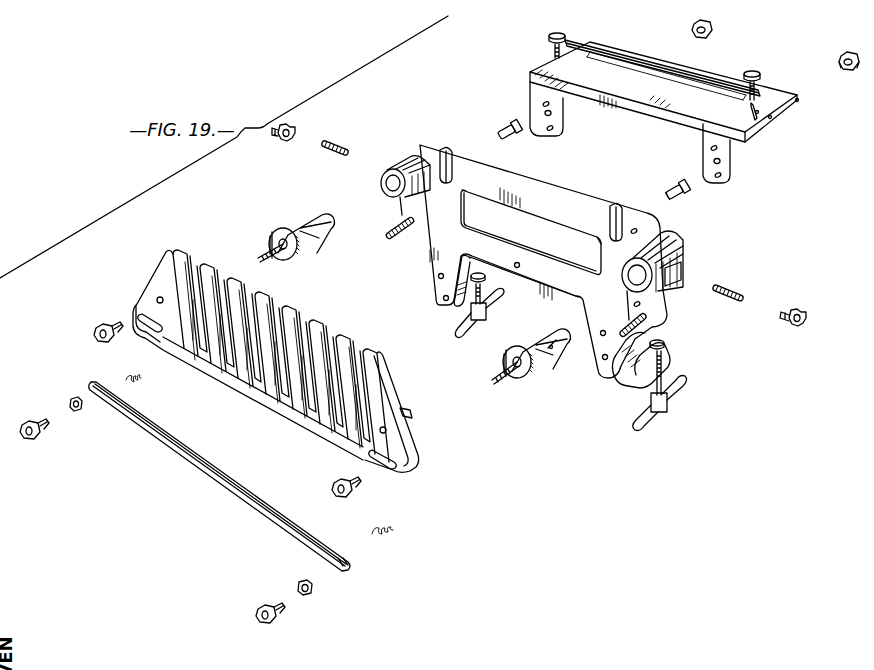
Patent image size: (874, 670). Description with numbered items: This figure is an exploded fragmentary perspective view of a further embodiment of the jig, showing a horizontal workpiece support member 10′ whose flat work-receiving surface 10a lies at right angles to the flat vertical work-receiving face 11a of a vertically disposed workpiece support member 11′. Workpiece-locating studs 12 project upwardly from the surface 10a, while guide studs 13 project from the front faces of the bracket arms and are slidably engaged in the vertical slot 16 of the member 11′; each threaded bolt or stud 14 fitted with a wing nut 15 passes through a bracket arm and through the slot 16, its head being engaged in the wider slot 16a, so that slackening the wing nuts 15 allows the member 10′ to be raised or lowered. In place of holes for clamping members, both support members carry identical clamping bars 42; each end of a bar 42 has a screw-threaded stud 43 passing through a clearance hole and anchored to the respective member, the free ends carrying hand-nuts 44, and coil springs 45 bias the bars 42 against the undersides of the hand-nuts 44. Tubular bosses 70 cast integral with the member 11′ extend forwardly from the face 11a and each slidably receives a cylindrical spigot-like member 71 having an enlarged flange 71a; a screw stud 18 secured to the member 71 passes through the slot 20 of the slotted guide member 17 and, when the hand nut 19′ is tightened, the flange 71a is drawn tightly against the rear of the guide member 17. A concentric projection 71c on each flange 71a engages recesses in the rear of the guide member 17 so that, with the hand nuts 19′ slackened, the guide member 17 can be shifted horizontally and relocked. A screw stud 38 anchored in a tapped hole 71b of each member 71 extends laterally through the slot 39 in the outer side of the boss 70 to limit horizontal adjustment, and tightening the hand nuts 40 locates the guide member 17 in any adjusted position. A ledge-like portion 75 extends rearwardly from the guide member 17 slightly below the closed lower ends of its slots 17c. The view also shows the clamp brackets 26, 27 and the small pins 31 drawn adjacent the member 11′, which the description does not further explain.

The workpiece support member 10′ is at (546, 58).
The work-receiving surface 10a is at (705, 108).
The workpiece support member 11′ is at (546, 175).
The work-receiving face 11a is at (537, 203).
The workpiece-locating studs 12 is at (792, 102).
The guide studs 13 is at (711, 148).
The threaded bolt or stud 14 is at (686, 190).
The wing nut 15 is at (840, 58).
The vertical slot 16 is at (617, 205).
The wider slot 16a is at (600, 224).
The slotted guide member 17 is at (388, 388).
The slots 17c is at (268, 300).
The screw stud 18 is at (262, 256).
The hand nut 19′ is at (104, 324).
The slot 20 is at (155, 327).
The clamp bracket 26 is at (627, 384).
The clamp bracket 27 is at (458, 306).
The pins 31 is at (640, 230).
The screw stud 38 is at (349, 153).
The slot 39 is at (673, 283).
The hand nut 40 is at (296, 130).
The clamping bar 42 is at (712, 78).
The screw-threaded stud 43 is at (760, 113).
The hand-nut 44 is at (760, 78).
The coil spring 45 is at (141, 377).
The tubular boss 70 is at (680, 247).
The cylindrical spigot-like member 71 is at (307, 228).
The enlarged head or flange 71a is at (276, 236).
The screw tapped hole 71b is at (555, 349).
The concentric projection 71c is at (294, 256).
The ledge-like portion 75 is at (412, 410).